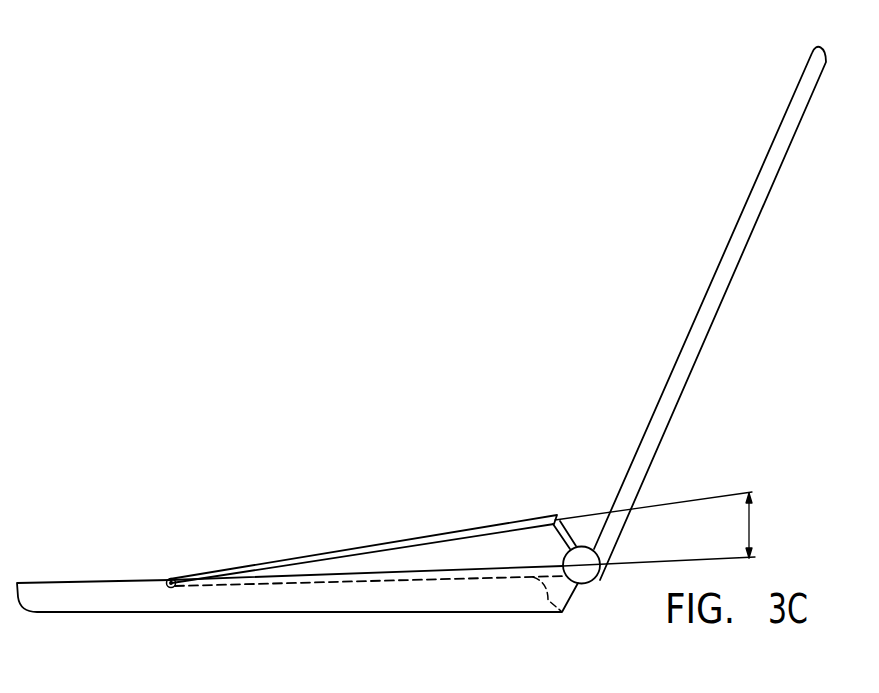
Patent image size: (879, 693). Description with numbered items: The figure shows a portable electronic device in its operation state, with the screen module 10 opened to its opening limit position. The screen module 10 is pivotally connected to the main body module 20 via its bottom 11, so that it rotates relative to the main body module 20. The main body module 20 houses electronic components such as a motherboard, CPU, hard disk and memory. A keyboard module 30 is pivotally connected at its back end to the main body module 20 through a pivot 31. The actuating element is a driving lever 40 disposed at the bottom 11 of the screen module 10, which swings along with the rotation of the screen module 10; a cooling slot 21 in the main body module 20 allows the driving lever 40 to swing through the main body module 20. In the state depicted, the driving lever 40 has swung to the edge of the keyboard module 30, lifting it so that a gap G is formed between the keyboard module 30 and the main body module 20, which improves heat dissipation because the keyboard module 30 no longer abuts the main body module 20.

The screen module 10 is at (748, 245).
The bottom 11 is at (583, 584).
The main body module 20 is at (286, 605).
The cooling slot 21 is at (547, 600).
The keyboard module 30 is at (383, 542).
The pivot 31 is at (169, 578).
The driving lever 40 is at (565, 529).
The gap G is at (662, 529).